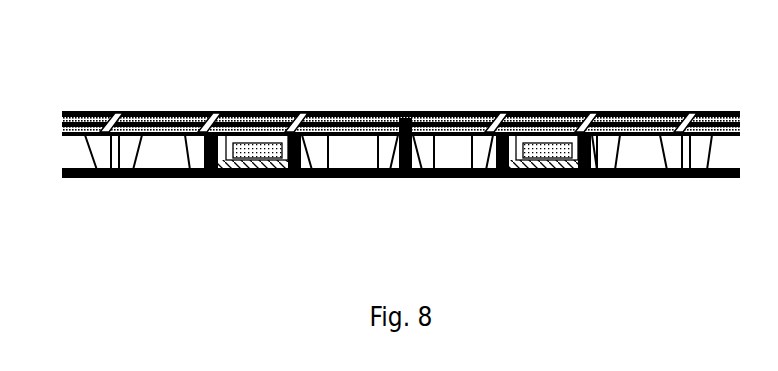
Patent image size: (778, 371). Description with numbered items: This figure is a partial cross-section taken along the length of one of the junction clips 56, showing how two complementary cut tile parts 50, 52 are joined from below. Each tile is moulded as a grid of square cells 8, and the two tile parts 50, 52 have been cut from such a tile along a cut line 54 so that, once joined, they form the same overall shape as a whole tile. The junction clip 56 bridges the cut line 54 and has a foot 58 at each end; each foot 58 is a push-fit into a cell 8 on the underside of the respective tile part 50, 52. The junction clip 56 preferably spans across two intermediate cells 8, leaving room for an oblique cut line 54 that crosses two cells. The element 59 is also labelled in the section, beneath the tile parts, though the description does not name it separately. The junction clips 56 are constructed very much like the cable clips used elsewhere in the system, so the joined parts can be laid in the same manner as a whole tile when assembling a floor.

The cell 8 is at (243, 150).
The tile part 50 is at (311, 120).
The tile part 52 is at (594, 118).
The cut line 54 is at (411, 112).
The junction clip 56 is at (375, 198).
The foot 58 is at (221, 153).
The bottom carrier layer 59 is at (437, 176).